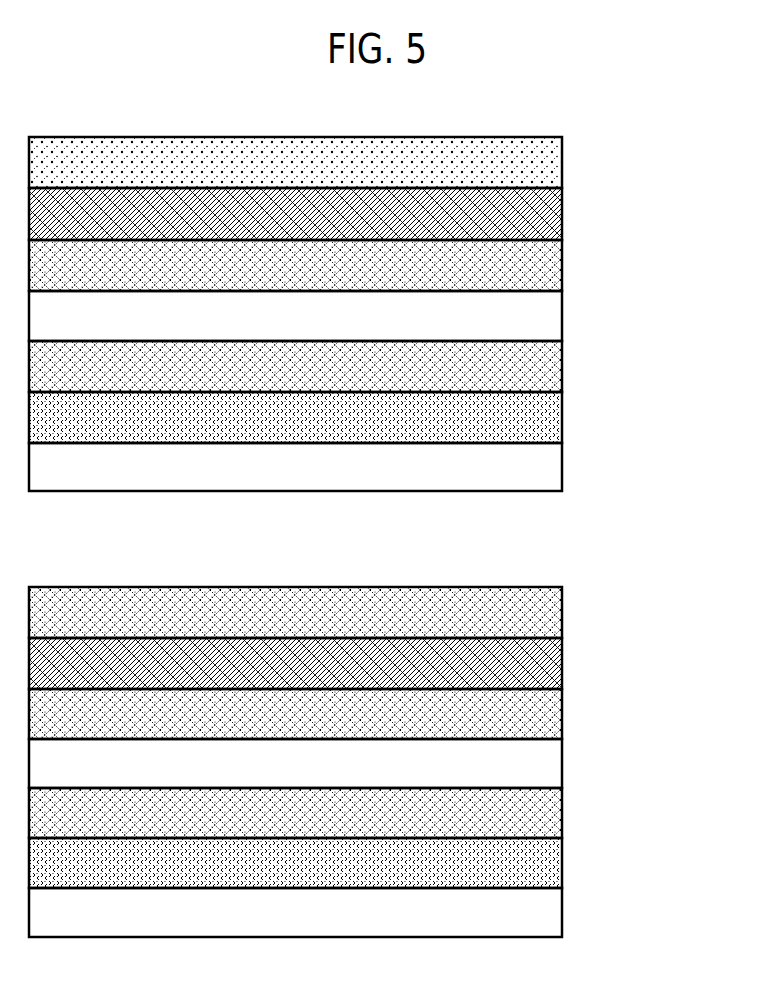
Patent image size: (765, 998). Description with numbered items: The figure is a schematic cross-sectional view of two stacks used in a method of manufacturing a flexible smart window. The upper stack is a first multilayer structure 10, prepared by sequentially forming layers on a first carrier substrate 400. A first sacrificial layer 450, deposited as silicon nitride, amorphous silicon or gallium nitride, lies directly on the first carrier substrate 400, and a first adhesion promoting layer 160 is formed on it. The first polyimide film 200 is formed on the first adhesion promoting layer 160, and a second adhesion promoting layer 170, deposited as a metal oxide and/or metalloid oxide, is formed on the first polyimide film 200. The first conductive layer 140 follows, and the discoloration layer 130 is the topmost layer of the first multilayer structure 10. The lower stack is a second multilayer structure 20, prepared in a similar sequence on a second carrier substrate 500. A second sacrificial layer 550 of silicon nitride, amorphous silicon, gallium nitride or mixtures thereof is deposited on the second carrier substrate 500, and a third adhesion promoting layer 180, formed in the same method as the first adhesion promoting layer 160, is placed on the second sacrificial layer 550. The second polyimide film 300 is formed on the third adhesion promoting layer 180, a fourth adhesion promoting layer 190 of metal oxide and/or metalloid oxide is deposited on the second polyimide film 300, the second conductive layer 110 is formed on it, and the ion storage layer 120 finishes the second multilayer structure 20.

The first multilayer structure 10 is at (76, 118).
The second multilayer structure 20 is at (76, 570).
The discoloration layer 130 is at (545, 163).
The first conductive layer 140 is at (545, 215).
The second adhesion promoting layer 170 is at (545, 266).
The first polyimide film 200 is at (545, 319).
The first adhesion promoting layer 160 is at (545, 367).
The first sacrificial layer 450 is at (545, 421).
The first carrier substrate 400 is at (545, 472).
The ion storage layer 120 is at (545, 622).
The second conductive layer 110 is at (545, 674).
The fourth adhesion promoting layer 190 is at (545, 717).
The second polyimide film 300 is at (545, 767).
The third adhesion promoting layer 180 is at (545, 817).
The second sacrificial layer 550 is at (545, 867).
The second carrier substrate 500 is at (545, 917).